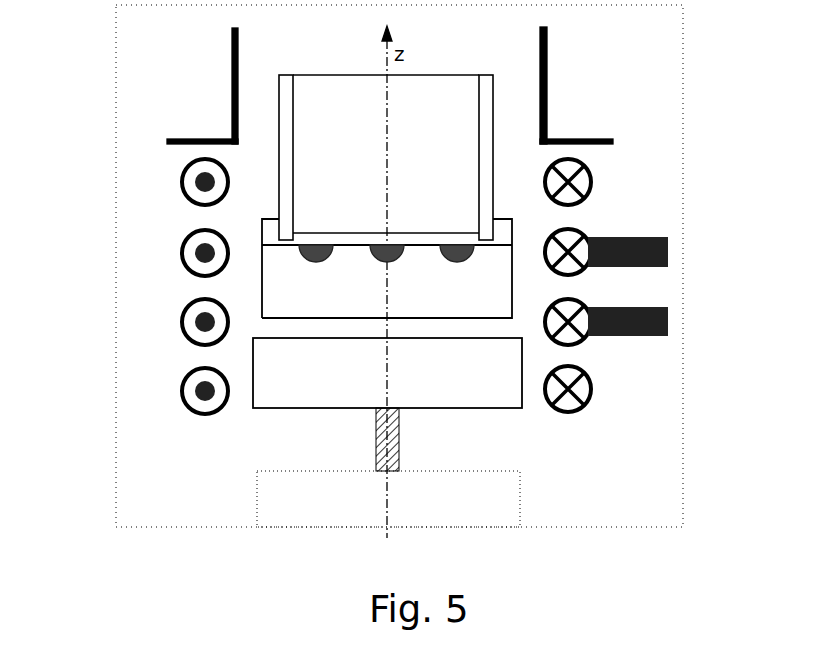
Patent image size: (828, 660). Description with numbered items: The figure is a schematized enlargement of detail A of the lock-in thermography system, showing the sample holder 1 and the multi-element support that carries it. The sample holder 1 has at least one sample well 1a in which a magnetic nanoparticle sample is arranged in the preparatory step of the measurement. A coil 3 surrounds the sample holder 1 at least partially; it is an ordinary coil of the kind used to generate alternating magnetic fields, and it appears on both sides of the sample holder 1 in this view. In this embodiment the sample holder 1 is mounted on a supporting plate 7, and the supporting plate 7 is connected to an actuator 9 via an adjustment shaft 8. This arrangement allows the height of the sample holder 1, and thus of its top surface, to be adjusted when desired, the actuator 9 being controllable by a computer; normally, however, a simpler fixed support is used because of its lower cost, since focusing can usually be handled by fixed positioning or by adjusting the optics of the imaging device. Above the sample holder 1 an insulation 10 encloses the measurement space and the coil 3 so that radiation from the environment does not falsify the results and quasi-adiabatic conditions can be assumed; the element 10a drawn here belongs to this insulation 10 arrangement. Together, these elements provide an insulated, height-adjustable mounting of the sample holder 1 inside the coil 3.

The detail A is at (108, 36).
The sample holder 1 is at (267, 289).
The sample well 1a is at (283, 243).
The coil 3 is at (593, 182).
The supporting plate 7 is at (330, 366).
The adjustment shaft 8 is at (399, 434).
The actuator 9 is at (275, 497).
The insulation 10 is at (547, 66).
The shield container wall 10a is at (286, 109).